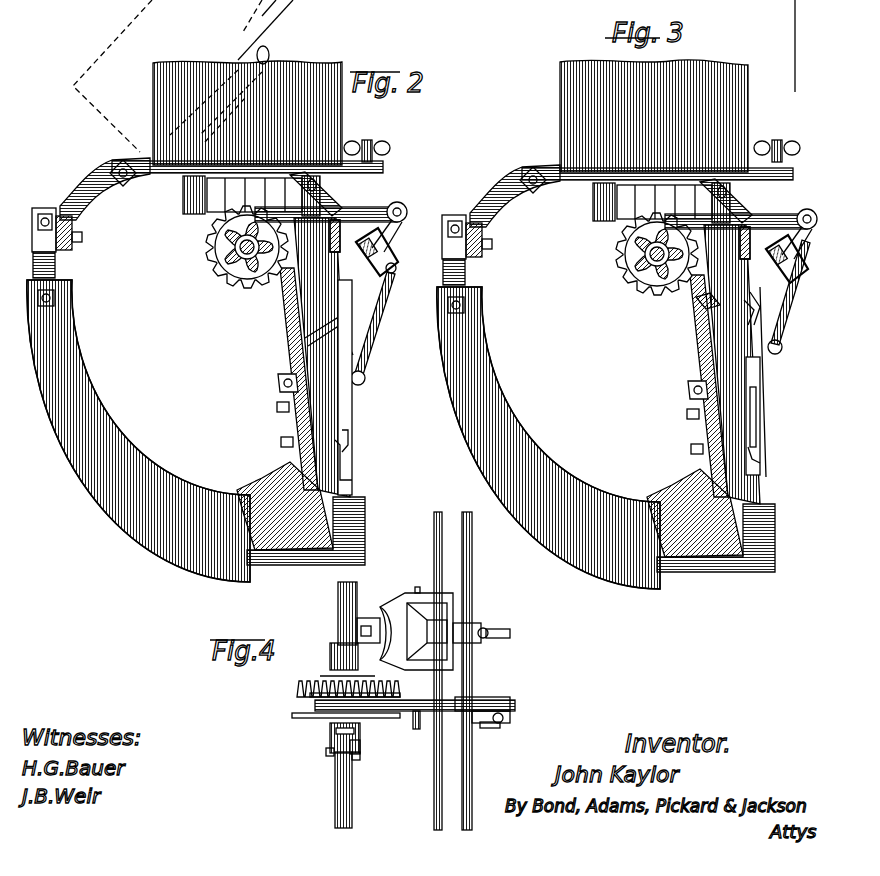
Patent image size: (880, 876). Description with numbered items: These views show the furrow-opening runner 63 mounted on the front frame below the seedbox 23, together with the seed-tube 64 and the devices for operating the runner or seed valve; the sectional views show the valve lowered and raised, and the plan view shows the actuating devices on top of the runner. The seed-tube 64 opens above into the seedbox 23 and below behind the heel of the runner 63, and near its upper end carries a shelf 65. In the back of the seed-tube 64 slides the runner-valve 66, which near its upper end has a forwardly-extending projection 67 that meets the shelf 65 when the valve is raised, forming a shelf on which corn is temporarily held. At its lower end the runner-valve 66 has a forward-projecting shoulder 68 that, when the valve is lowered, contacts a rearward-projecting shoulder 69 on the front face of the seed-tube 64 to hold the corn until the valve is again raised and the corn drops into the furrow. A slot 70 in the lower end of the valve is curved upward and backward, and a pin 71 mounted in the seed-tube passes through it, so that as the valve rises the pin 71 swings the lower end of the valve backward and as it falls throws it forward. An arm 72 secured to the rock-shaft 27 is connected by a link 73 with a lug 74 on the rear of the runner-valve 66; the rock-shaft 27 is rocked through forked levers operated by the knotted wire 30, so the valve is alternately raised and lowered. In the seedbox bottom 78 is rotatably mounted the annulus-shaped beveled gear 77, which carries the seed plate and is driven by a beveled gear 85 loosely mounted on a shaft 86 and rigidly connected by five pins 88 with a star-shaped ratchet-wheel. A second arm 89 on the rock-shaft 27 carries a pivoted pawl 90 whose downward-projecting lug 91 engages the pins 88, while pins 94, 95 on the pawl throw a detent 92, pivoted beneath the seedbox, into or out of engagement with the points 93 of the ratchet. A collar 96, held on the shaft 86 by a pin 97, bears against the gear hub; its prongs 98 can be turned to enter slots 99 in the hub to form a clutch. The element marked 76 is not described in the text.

In FIG. 2, the seedbox 23 is at (312, 55).
In FIG. 3, the seedbox 23 is at (654, 116).
In FIG. 2, the rock-shaft 27 is at (385, 208).
In FIG. 3, the rock-shaft 27 is at (743, 207).
In FIG. 4, the rock-shaft 27 is at (470, 668).
In FIG. 3, the knotted wire 30 is at (775, 46).
In FIG. 2, the furrow-opening runner 63 is at (143, 462).
In FIG. 3, the furrow-opening runner 63 is at (548, 438).
In FIG. 2, the seed-tube 64 is at (312, 360).
In FIG. 3, the seed-tube 64 is at (703, 364).
In FIG. 4, the seed-tube 64 is at (404, 598).
In FIG. 2, the shelf 65 is at (290, 330).
In FIG. 3, the shelf 65 is at (678, 386).
In FIG. 3, the runner-valve 66 is at (779, 382).
In FIG. 3, the forwardly-extending projection 67 is at (681, 321).
In FIG. 2, the forward-projecting shoulder 68 is at (352, 497).
In FIG. 3, the forward-projecting shoulder 68 is at (730, 523).
In FIG. 2, the rearward-projecting shoulder 69 is at (288, 482).
In FIG. 3, the rearward-projecting shoulder 69 is at (727, 513).
In FIG. 2, the slot 70 is at (353, 462).
In FIG. 3, the slot 70 is at (776, 416).
In FIG. 2, the pin 71 is at (353, 442).
In FIG. 3, the pin 71 is at (778, 456).
In FIG. 2, the arm 72 is at (395, 272).
In FIG. 3, the arm 72 is at (797, 242).
In FIG. 2, the link 73 is at (382, 318).
In FIG. 3, the link 73 is at (794, 292).
In FIG. 3, the lug 74 is at (788, 349).
In FIG. 2, the bracket 76 is at (337, 337).
In FIG. 3, the bracket 76 is at (760, 308).
In FIG. 2, the annulus-shaped beveled gear 77 is at (222, 188).
In FIG. 2, the bottom of the seedbox 78 is at (184, 192).
In FIG. 3, the bottom of the seedbox 78 is at (639, 203).
In FIG. 2, the beveled gear 85 is at (208, 258).
In FIG. 3, the beveled gear 85 is at (634, 254).
In FIG. 4, the beveled gear 85 is at (300, 684).
In FIG. 4, the shaft 86 is at (340, 790).
In FIG. 4, the pins 88 is at (318, 702).
In FIG. 2, the arm 89 is at (400, 228).
In FIG. 3, the arm 89 is at (800, 208).
In FIG. 4, the arm 89 is at (486, 700).
In FIG. 2, the pawl 90 is at (340, 205).
In FIG. 3, the pawl 90 is at (754, 166).
In FIG. 4, the pawl 90 is at (405, 706).
In FIG. 2, the downward-projecting lug 91 is at (234, 271).
In FIG. 2, the detent 92 is at (368, 142).
In FIG. 2, the points 93 is at (252, 318).
In FIG. 3, the points 93 is at (557, 224).
In FIG. 2, the pin 94 is at (392, 250).
In FIG. 4, the pin 94 is at (472, 728).
In FIG. 4, the pin 95 is at (416, 730).
In FIG. 4, the collar 96 is at (334, 738).
In FIG. 4, the pin 97 is at (358, 748).
In FIG. 4, the prongs 98 is at (330, 752).
In FIG. 4, the slots 99 is at (336, 730).